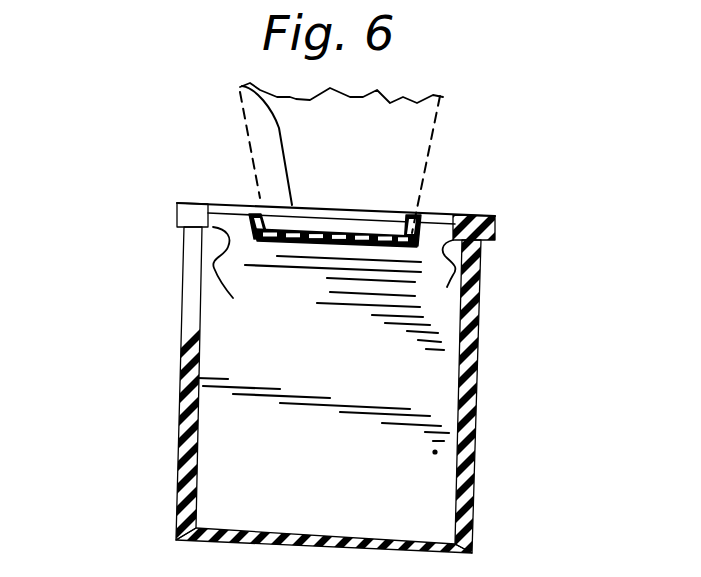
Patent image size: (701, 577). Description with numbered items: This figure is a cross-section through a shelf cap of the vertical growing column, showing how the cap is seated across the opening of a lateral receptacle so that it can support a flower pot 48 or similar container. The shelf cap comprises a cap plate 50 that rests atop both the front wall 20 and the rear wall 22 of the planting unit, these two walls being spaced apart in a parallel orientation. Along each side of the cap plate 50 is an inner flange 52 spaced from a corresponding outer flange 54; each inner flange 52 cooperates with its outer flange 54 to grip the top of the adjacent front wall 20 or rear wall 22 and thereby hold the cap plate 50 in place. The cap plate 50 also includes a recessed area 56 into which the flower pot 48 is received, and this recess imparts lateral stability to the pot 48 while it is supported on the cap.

The front wall 20 is at (478, 371).
The rear wall 22 is at (181, 377).
The flower pot 48 is at (408, 128).
The cap plate 50 is at (430, 218).
The inner flanges 52 is at (336, 277).
The outer flanges 54 is at (178, 208).
The recessed area 56 is at (240, 90).